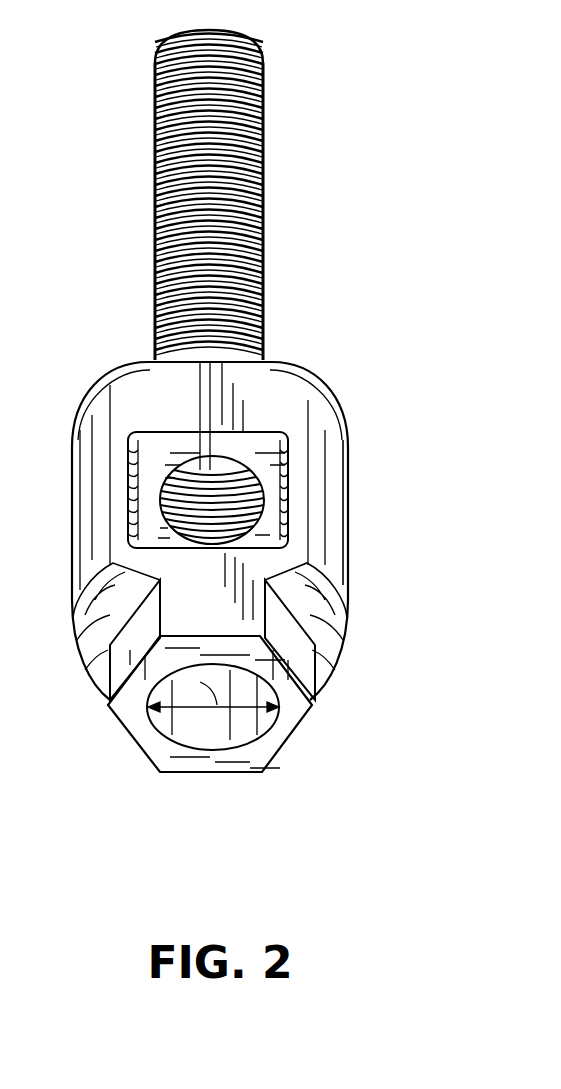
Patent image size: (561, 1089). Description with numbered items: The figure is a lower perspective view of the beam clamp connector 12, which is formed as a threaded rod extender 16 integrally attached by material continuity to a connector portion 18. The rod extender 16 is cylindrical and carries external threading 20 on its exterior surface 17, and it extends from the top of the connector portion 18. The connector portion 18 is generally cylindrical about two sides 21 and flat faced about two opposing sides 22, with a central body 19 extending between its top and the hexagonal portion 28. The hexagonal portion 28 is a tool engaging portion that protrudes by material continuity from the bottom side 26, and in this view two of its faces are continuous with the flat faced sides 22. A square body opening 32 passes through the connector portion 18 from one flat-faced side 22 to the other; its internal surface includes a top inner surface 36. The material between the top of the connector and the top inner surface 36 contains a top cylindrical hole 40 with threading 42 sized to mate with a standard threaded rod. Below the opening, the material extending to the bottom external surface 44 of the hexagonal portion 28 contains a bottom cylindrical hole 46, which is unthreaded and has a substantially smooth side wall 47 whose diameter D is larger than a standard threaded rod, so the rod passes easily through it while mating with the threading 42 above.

The beam clamp connector 12 is at (286, 161).
The threaded rod extender 16 is at (153, 187).
The exterior surface 17 is at (150, 220).
The external threading 20 is at (153, 110).
The flat faced sides 22 is at (277, 390).
The central body 19 is at (330, 442).
The connector portion 18 is at (348, 479).
The cylindrical sides 21 is at (345, 580).
The body opening 32 is at (160, 447).
The top inner surface 36 is at (153, 553).
The top cylindrical hole 40 is at (213, 478).
The threading 42 is at (160, 500).
The bottom side 26 is at (130, 613).
The hexagonal portion 28 is at (137, 748).
The bottom external surface 44 is at (269, 757).
The bottom cylindrical hole 46 is at (208, 728).
The side wall 47 is at (250, 722).